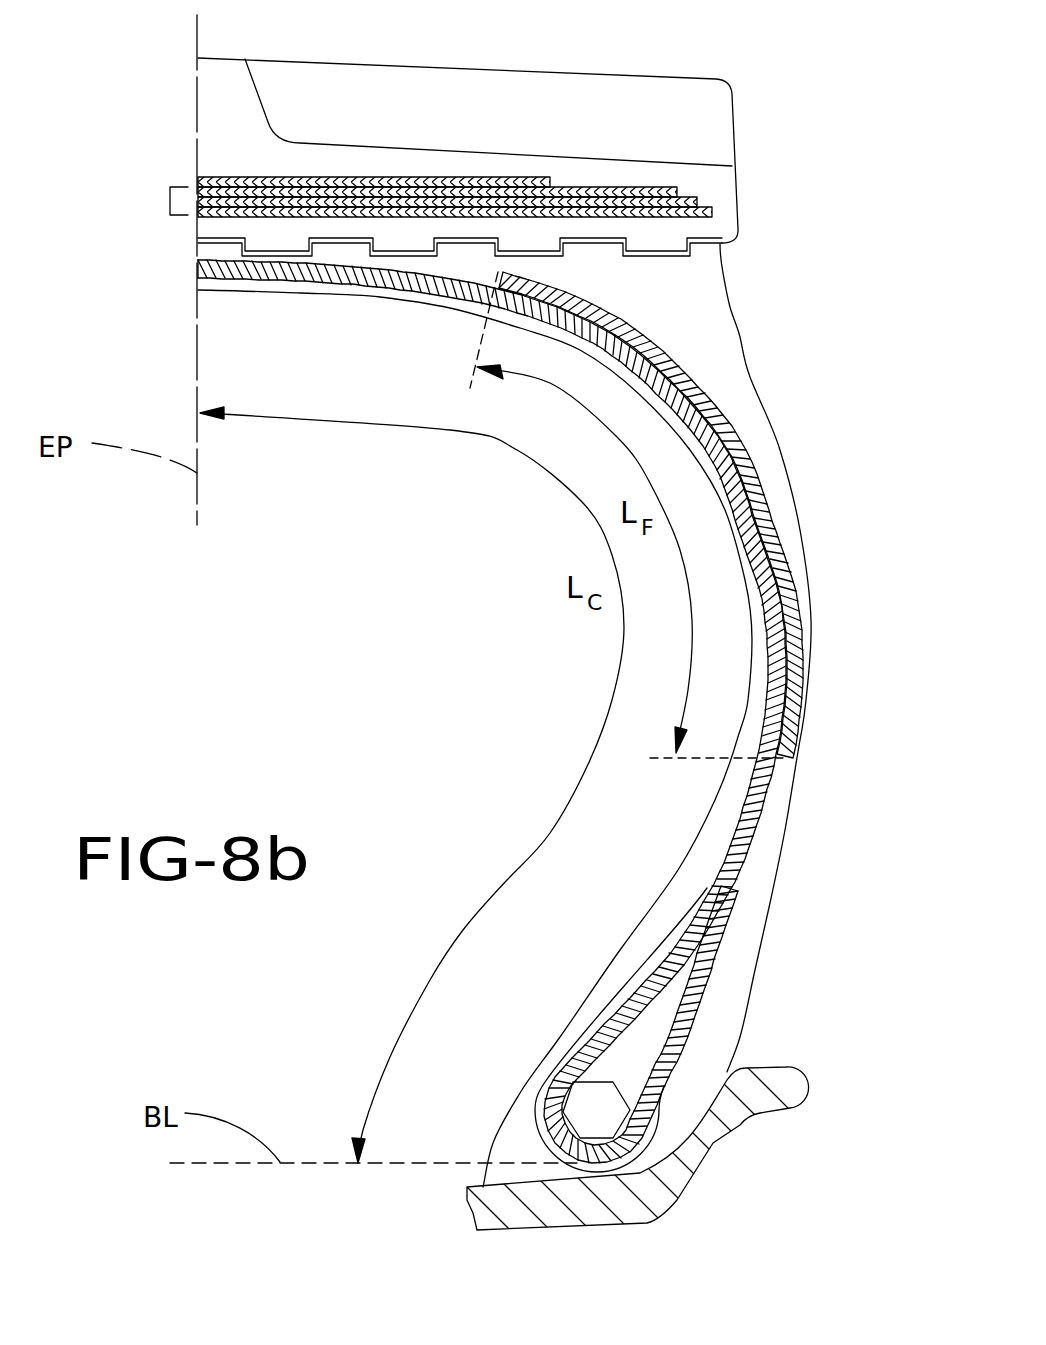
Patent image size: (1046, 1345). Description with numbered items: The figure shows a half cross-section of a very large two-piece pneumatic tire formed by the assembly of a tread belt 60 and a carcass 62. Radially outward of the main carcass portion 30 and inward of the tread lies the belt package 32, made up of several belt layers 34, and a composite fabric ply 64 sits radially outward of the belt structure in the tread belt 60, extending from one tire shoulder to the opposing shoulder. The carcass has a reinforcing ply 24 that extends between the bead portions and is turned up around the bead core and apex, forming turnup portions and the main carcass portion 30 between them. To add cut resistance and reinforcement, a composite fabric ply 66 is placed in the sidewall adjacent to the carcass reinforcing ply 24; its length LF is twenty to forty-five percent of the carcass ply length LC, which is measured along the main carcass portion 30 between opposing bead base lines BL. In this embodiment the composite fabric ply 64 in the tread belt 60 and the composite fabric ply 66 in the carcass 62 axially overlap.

The carcass reinforcing ply 24 is at (753, 800).
The main carcass portion 30 is at (707, 888).
The belt package 32 is at (167, 203).
The belt layer 34 is at (648, 188).
The tread belt 60 is at (490, 93).
The carcass 62 is at (700, 327).
The composite fabric ply 64 is at (238, 178).
The composite fabric ply 66 is at (765, 507).